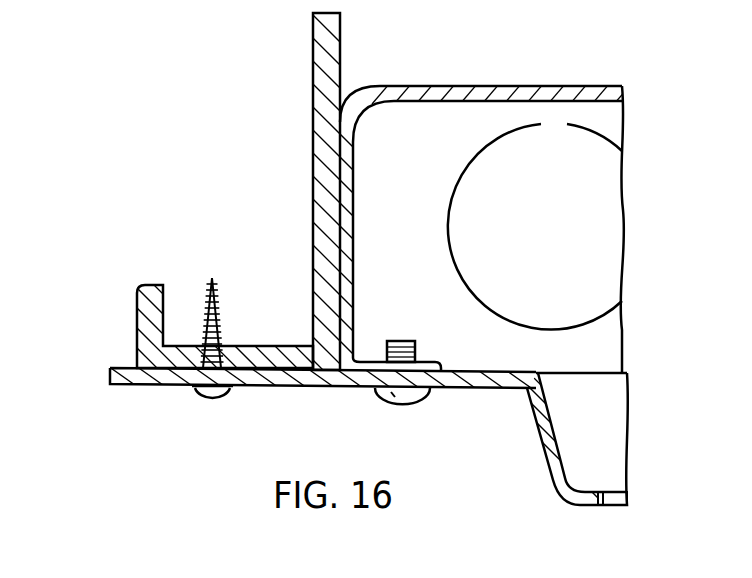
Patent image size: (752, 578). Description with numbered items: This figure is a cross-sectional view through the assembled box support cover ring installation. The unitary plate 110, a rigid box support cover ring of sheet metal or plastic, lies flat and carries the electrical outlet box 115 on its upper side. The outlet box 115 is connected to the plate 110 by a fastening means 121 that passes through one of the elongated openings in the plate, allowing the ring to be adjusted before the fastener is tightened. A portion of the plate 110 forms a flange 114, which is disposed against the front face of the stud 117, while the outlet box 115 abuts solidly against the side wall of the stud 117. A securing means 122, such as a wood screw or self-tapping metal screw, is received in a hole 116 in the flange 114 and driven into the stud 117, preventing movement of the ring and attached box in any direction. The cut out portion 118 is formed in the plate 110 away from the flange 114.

The unitary plate 110 is at (535, 472).
The flange 114 is at (273, 390).
The electrical outlet box 115 is at (490, 80).
The holes 116 is at (138, 332).
The stud 117 is at (313, 105).
The cut out portion 118 is at (608, 506).
The fastening means 121 is at (392, 396).
The securing means 122 is at (197, 399).